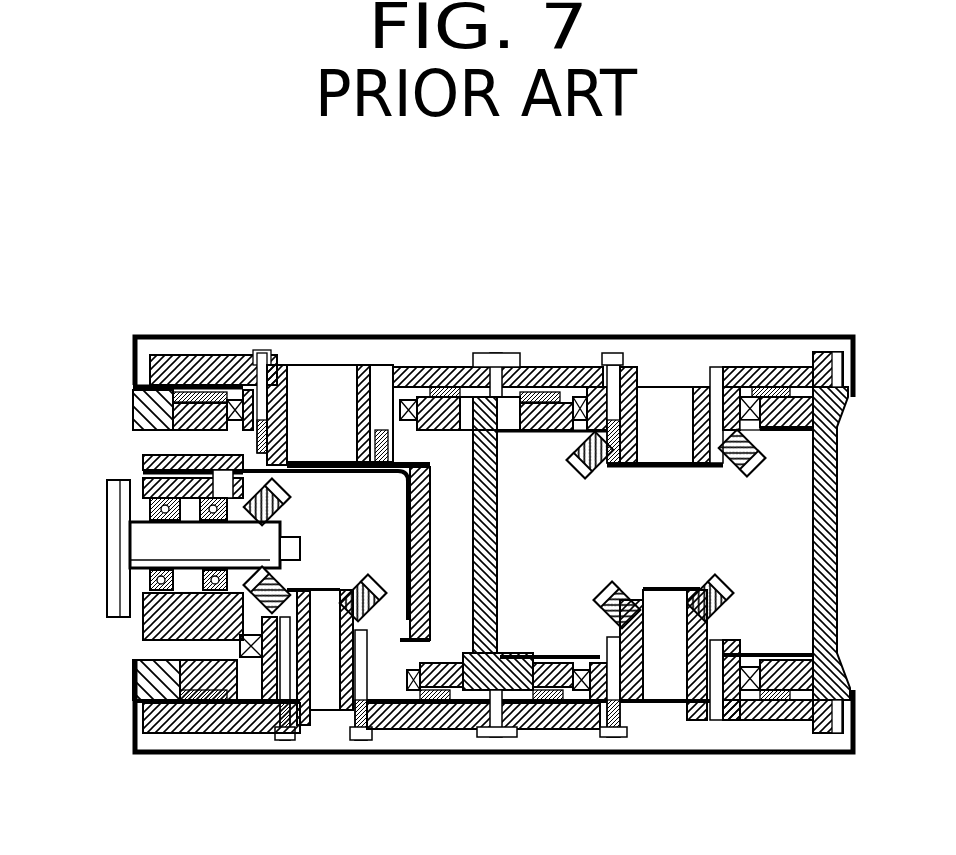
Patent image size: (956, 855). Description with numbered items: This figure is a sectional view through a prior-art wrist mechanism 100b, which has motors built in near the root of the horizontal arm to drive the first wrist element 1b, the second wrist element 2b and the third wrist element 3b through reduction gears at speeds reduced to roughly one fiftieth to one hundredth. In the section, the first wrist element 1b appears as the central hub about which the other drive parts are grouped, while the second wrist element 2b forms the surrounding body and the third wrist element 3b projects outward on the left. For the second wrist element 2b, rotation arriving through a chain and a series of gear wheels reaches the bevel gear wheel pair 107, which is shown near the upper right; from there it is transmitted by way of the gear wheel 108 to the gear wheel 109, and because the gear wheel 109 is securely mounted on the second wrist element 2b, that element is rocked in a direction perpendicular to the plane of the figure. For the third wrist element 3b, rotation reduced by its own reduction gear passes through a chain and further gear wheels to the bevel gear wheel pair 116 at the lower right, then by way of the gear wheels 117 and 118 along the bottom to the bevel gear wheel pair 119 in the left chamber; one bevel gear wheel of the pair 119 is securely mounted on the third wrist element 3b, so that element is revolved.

The wrist mechanism 100b is at (569, 329).
The gear wheel 109 is at (197, 338).
The gear wheel 108 is at (750, 367).
The second wrist element 2b is at (180, 455).
The third wrist element 3b is at (112, 533).
The bevel gear wheel pair 119 is at (288, 516).
The bevel gear wheel pair 107 is at (697, 465).
The first wrist element 1b is at (483, 578).
The bevel gear wheel pair 116 is at (713, 613).
The gear wheel 118 is at (408, 728).
The gear wheel 117 is at (578, 722).